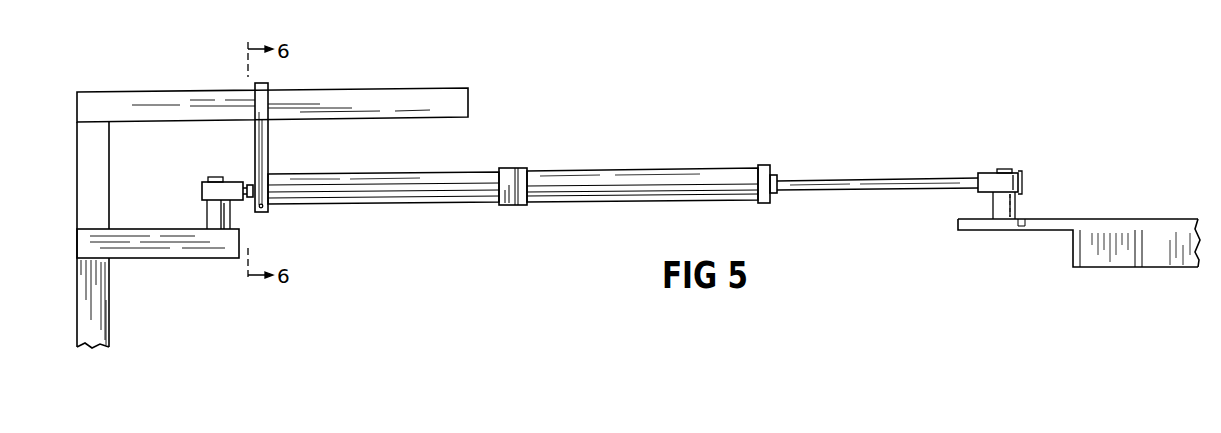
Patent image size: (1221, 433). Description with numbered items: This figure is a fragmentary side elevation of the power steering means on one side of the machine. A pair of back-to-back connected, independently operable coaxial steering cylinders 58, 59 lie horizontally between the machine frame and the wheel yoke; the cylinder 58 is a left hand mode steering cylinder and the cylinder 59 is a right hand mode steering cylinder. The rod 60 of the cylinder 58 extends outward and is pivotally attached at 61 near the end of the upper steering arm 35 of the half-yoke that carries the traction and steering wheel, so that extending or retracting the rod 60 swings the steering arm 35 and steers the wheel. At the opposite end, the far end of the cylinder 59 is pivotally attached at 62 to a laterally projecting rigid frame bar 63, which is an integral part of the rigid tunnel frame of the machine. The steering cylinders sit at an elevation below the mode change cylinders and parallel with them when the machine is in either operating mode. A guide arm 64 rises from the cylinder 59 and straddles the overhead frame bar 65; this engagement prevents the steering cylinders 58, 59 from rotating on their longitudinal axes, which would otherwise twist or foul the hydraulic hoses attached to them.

The upper steering arm 35 is at (1130, 218).
The left hand mode steering cylinder 58 is at (660, 185).
The right hand mode steering cylinder 59 is at (393, 188).
The rod 60 is at (895, 189).
The pivotal attachment 61 is at (1010, 168).
The pivotal attachment 62 is at (218, 192).
The rigid frame bar 63 is at (157, 256).
The guide arm 64 is at (268, 140).
The overhead frame bar 65 is at (373, 100).